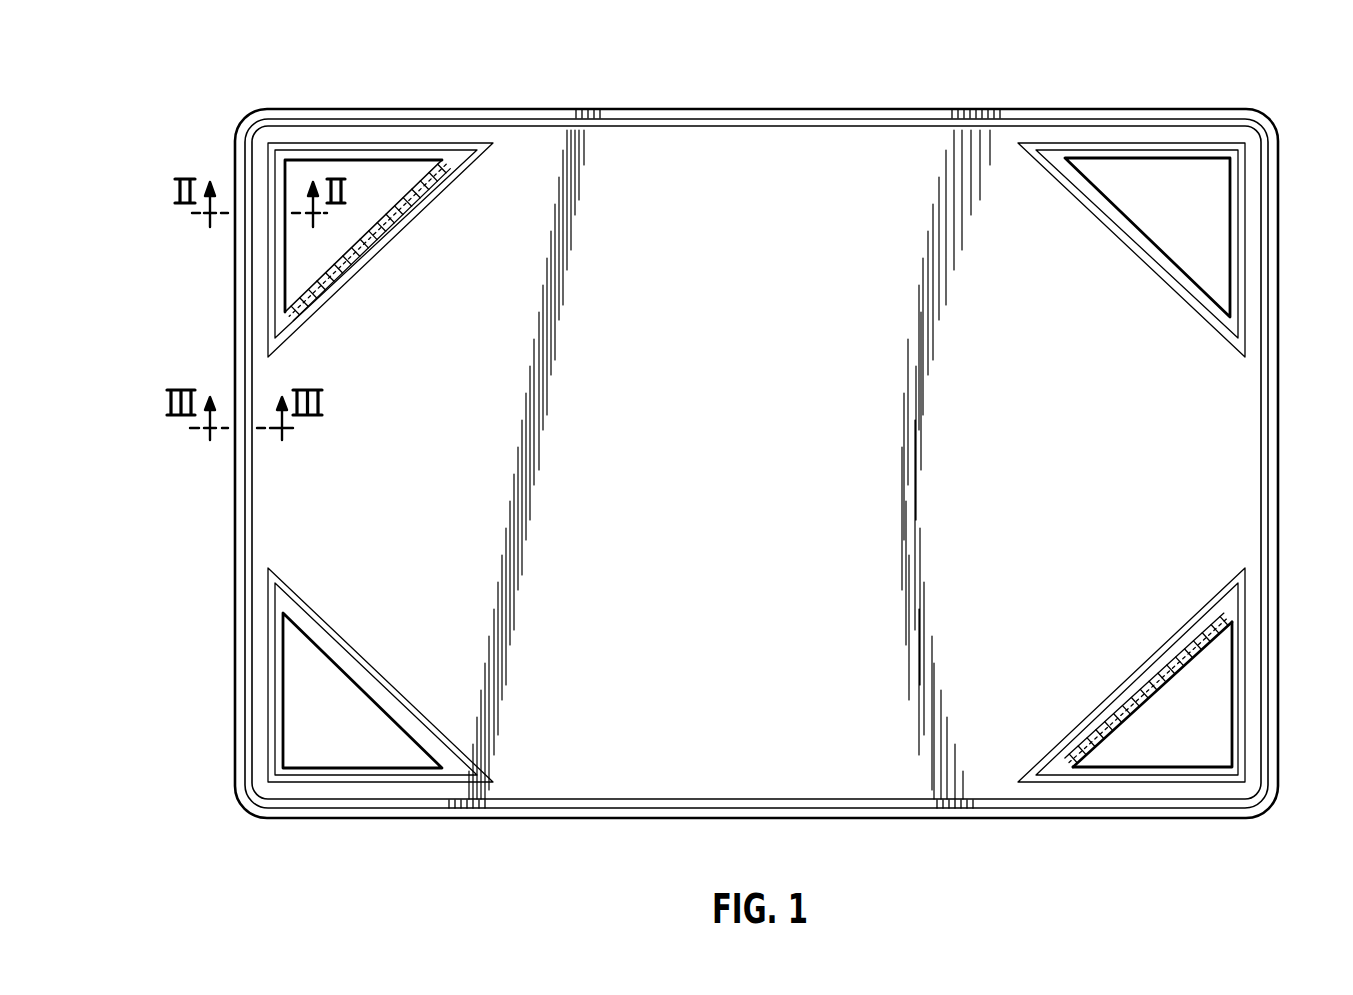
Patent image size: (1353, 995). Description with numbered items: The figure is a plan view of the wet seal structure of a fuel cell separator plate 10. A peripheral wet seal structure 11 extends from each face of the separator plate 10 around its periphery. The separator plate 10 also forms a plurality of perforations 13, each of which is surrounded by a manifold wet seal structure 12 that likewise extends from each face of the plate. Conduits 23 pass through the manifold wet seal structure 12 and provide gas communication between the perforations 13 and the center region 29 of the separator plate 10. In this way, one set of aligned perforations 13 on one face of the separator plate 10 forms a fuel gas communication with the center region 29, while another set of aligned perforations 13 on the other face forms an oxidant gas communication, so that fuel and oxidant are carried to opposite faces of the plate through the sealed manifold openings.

The fuel cell separator plate 10 is at (866, 92).
The peripheral wet seal structure 11 is at (248, 297).
The manifold wet seal structure 12 is at (405, 228).
The perforations 13 is at (385, 178).
The conduits 23 is at (353, 270).
The center region 29 is at (787, 470).